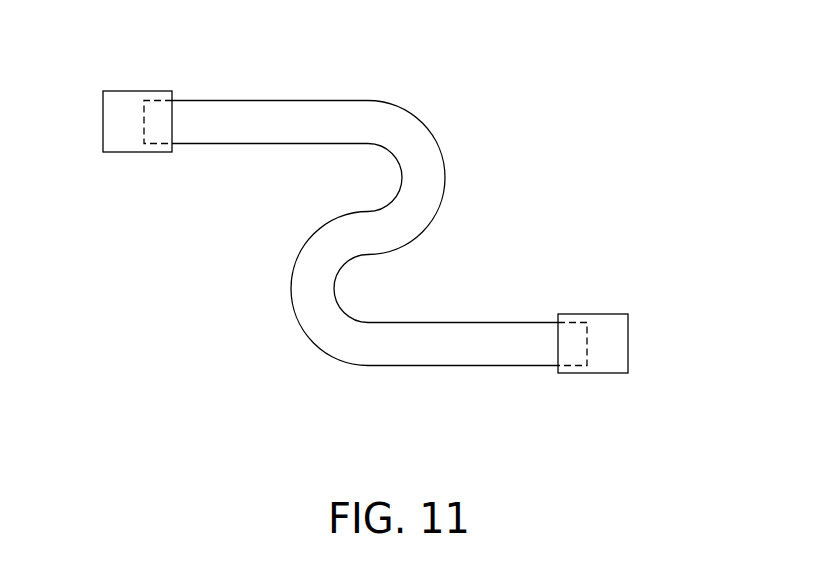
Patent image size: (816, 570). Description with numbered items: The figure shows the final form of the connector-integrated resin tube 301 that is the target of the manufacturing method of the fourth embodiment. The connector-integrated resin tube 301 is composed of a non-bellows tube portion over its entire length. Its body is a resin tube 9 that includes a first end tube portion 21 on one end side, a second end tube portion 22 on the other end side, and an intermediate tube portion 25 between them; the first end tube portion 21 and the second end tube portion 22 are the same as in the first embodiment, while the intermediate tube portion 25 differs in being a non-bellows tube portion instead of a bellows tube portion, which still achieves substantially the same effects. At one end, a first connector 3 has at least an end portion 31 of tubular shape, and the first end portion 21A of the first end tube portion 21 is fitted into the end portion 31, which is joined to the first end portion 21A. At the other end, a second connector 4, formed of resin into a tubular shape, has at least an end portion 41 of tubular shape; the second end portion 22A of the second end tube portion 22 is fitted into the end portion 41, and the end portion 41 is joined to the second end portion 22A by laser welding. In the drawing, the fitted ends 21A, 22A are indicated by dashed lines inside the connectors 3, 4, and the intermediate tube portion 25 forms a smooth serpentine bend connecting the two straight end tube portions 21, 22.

The connector-integrated resin tube 301 is at (622, 110).
The resin tube 9 is at (425, 110).
The first connector 3 is at (113, 87).
The end portion of the first connector 31 is at (162, 91).
The first end portion 21A is at (158, 153).
The first end tube portion 21 is at (245, 144).
The intermediate tube portion 25 is at (300, 331).
The second end tube portion 22 is at (470, 366).
The second end portion 22A is at (575, 373).
The second connector 4 is at (631, 307).
The end portion of the second connector 41 is at (572, 314).